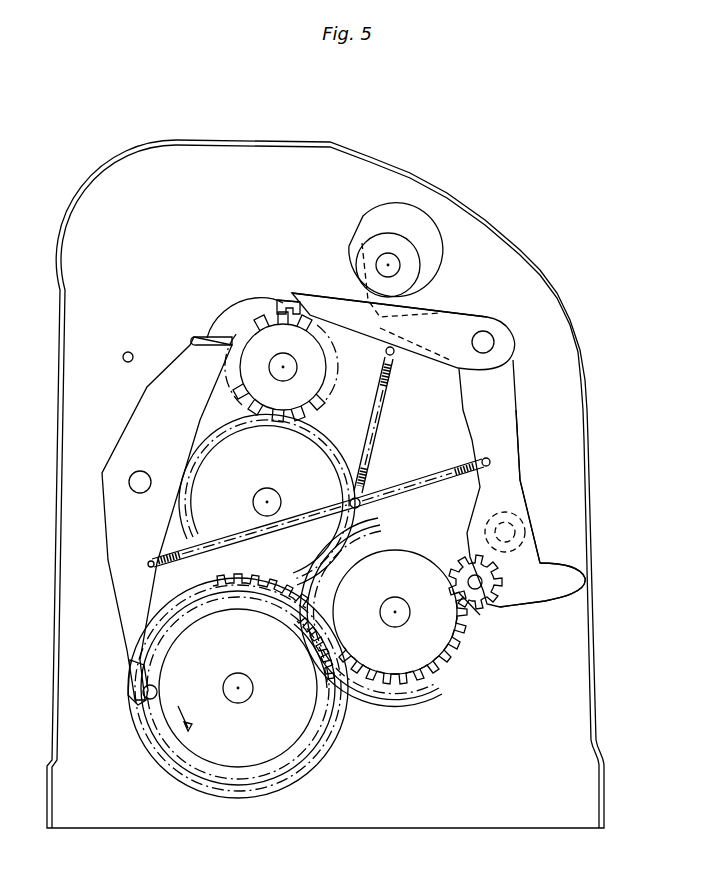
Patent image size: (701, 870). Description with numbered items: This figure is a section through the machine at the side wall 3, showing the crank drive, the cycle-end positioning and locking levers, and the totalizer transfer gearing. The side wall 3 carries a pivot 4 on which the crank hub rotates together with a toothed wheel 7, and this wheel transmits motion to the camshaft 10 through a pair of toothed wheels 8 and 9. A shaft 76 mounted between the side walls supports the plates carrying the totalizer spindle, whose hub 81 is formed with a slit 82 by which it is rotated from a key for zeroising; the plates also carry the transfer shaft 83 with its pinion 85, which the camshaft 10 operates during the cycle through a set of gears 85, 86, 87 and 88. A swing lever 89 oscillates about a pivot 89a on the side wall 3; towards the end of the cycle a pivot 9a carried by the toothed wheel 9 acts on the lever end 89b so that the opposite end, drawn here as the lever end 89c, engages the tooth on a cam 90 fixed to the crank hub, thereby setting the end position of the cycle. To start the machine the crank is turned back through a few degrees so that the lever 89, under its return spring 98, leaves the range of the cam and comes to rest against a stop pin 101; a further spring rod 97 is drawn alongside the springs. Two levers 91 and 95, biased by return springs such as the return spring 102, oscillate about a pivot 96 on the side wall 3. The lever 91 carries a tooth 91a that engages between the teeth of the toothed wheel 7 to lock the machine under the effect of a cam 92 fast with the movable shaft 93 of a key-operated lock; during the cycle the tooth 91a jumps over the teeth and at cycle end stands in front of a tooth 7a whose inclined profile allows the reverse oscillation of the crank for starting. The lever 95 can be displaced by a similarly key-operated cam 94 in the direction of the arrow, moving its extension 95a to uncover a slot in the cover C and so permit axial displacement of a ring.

The side wall 3 is at (583, 648).
The cover C is at (455, 197).
The pivot 4 is at (297, 367).
The toothed wheel 7 is at (317, 392).
The tooth 7a is at (290, 299).
The toothed wheel 8 is at (321, 456).
The toothed wheel 9 is at (213, 598).
The pivot 9a is at (145, 694).
The camshaft 10 is at (244, 692).
The shaft 76 is at (381, 612).
The hub 81 is at (519, 528).
The slit 82 is at (496, 523).
The transfer shaft 83 is at (486, 590).
The pinion 85 is at (481, 616).
The gear 86 is at (420, 668).
The gear 87 is at (352, 672).
The gear 88 is at (282, 752).
The swing lever 89 is at (123, 552).
The pivot 89a is at (137, 477).
The lever end 89b is at (138, 665).
The lever end 89c is at (200, 338).
The cam 90 is at (226, 309).
The lever 91 is at (331, 297).
The tooth 91a is at (295, 301).
The cam 92 is at (352, 250).
The movable shaft 93 is at (388, 263).
The cam 94 is at (436, 250).
The lever 95 is at (518, 372).
The extension 95a is at (527, 573).
The pivot 96 is at (489, 334).
The spring rod 97 is at (405, 482).
The return spring 98 is at (243, 535).
The stop pin 101 is at (126, 351).
The return spring 102 is at (378, 410).